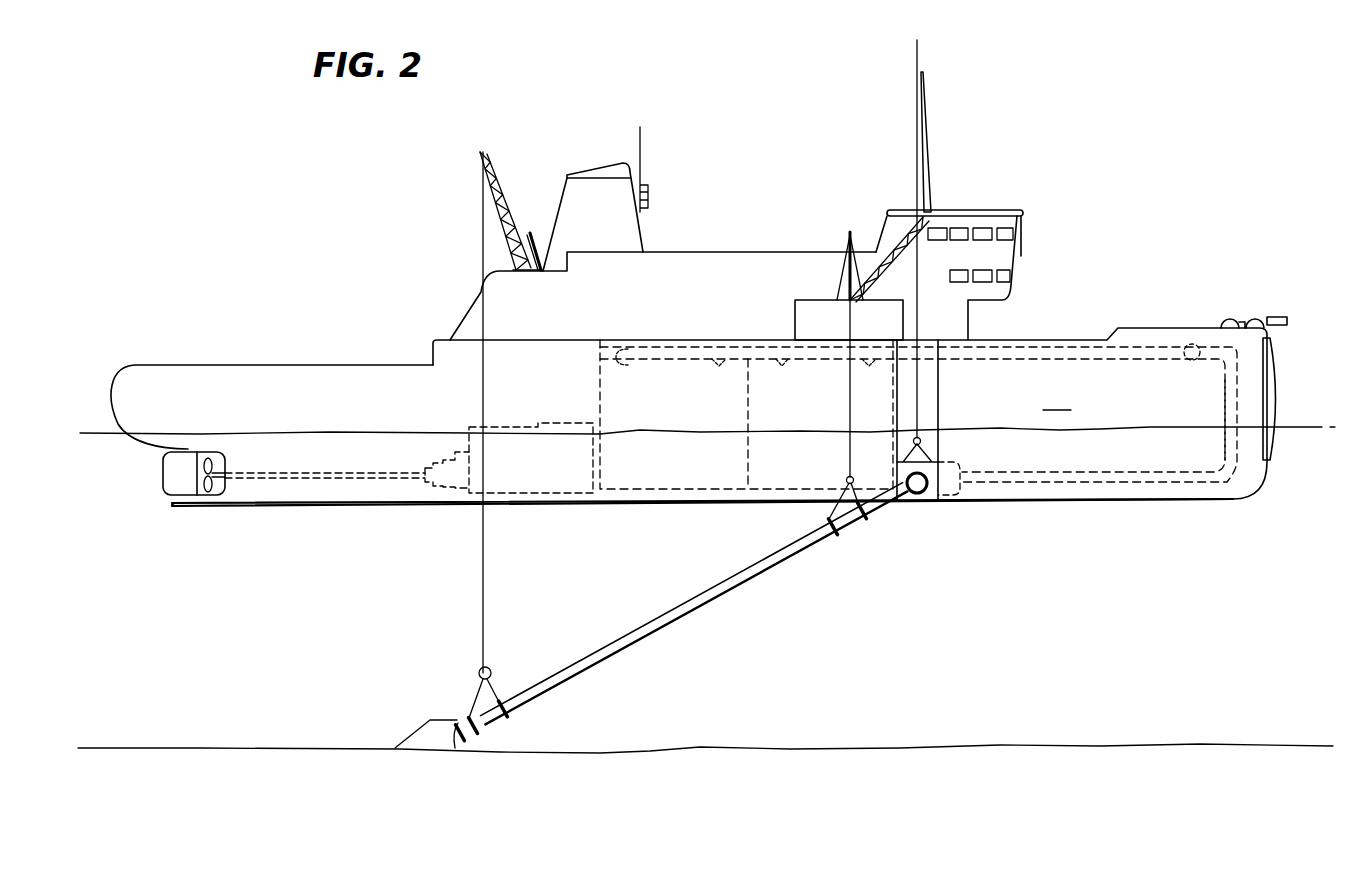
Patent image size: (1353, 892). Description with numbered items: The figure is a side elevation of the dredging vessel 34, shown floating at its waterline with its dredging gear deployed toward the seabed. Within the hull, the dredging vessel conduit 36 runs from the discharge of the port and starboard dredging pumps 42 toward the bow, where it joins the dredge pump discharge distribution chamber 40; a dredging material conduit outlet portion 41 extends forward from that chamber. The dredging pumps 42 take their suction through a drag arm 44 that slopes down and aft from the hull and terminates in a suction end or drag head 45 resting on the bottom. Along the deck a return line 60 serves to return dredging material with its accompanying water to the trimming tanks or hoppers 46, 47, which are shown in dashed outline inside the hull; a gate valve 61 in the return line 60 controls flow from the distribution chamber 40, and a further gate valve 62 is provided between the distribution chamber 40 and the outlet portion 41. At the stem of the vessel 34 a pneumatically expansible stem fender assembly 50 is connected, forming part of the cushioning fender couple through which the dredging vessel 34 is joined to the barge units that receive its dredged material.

The dredging vessel 34 is at (689, 356).
The dredging vessel conduit 36 is at (1226, 398).
The dredge pump discharge distribution chamber 40 is at (1230, 314).
The dredging material conduit outlet portion 41 is at (1283, 316).
The dredging pump 42 is at (955, 463).
The drag arm 44 is at (733, 582).
The drag head 45 is at (430, 719).
The trimming tank 46 is at (605, 382).
The trimming tank 47 is at (890, 403).
The stem fender assembly 50 is at (1280, 379).
The return line 60 is at (1077, 348).
The gate valve 61 is at (1187, 361).
The gate valve 62 is at (1257, 316).